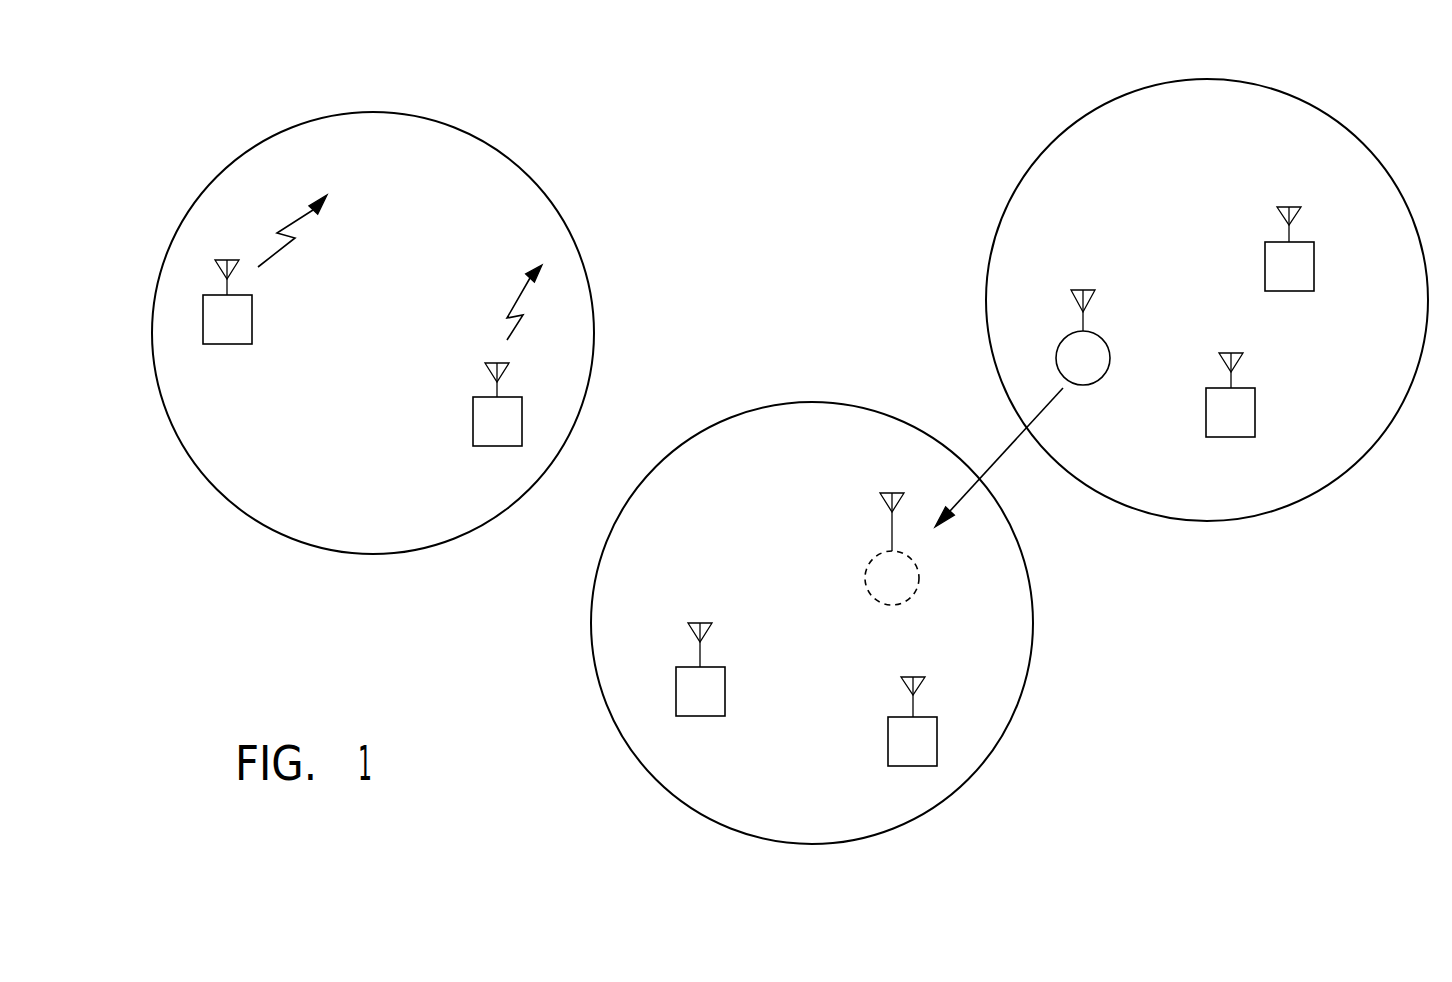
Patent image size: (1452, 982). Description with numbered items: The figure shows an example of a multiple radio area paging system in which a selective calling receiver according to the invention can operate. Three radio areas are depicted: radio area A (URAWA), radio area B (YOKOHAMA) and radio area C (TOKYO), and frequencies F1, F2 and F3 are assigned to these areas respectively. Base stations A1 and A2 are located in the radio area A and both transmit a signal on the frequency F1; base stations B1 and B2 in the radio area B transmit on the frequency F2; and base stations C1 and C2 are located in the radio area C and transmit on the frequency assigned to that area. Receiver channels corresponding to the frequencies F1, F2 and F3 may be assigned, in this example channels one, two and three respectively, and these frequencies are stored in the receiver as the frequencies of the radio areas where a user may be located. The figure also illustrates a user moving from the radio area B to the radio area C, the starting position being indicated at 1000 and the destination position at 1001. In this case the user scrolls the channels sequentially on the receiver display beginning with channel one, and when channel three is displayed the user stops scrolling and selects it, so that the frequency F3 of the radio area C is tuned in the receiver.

The frequency F1 is at (263, 572).
The frequency F2 is at (1097, 538).
The frequency F3 is at (702, 861).
The radio area A is at (373, 332).
The radio area B is at (1207, 301).
The radio area C is at (812, 623).
The base station A1 is at (222, 344).
The base station A2 is at (497, 447).
The base station B1 is at (1313, 258).
The base station B2 is at (1255, 420).
The base station C1 is at (705, 716).
The base station C2 is at (920, 767).
The user position in radio area B 1000 is at (1110, 350).
The user position in radio area C 1001 is at (910, 582).